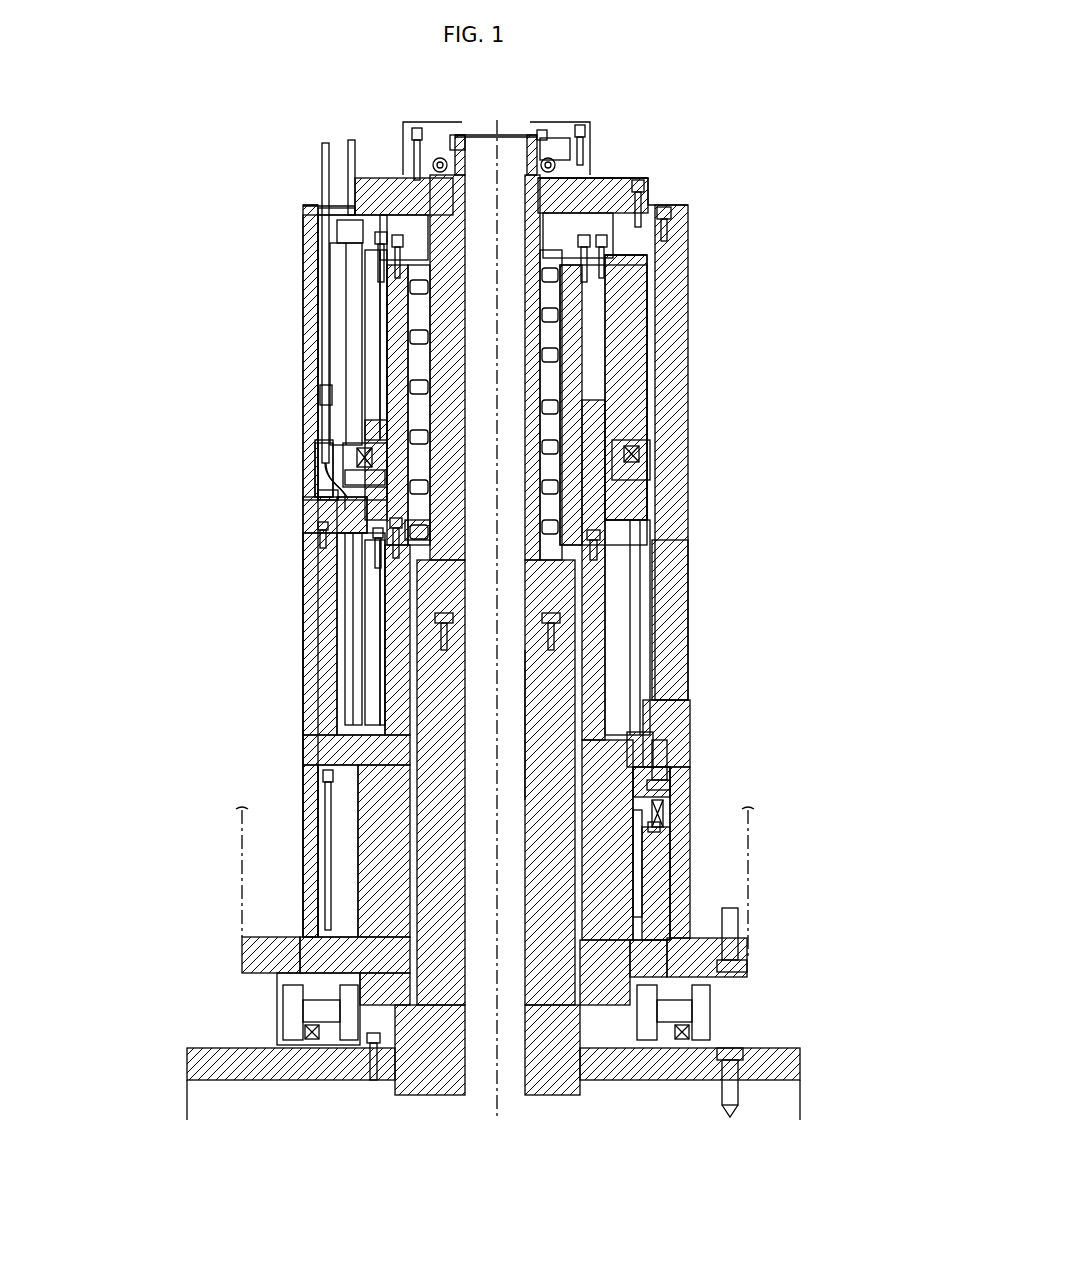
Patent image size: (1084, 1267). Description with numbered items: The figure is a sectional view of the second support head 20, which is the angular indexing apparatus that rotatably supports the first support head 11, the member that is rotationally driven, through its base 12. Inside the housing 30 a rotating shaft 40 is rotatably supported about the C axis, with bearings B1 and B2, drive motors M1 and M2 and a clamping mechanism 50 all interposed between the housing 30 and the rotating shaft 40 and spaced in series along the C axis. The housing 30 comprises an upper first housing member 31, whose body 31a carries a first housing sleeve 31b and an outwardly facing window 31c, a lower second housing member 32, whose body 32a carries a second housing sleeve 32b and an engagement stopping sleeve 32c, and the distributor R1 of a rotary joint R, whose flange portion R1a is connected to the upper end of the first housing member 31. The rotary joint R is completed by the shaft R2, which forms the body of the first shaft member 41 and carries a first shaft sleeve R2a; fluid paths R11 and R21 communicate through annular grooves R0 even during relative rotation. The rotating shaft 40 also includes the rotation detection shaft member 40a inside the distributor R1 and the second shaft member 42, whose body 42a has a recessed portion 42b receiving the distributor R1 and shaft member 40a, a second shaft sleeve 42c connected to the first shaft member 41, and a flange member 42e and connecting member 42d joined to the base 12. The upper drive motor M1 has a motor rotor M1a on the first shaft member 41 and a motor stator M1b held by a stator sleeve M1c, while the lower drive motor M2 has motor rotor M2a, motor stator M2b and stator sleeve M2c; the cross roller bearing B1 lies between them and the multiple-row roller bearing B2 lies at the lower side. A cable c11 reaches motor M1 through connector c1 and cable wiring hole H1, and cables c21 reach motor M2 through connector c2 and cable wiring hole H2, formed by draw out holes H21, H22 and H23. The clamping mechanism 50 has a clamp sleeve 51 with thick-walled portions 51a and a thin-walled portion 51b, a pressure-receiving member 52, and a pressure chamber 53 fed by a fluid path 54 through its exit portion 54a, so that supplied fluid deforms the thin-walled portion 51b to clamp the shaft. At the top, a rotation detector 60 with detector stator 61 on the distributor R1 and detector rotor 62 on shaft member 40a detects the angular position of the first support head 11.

The C axis C is at (495, 600).
The first support head 11 is at (231, 1067).
The base 12 is at (195, 1048).
The second support head 20 is at (868, 130).
The housing 30 is at (296, 301).
The first housing member 31 is at (235, 232).
The body 31a is at (308, 281).
The first housing sleeve 31b is at (308, 221).
The outwardly facing window 31c is at (318, 473).
The second housing member 32 is at (296, 596).
The body 32a is at (322, 549).
The second housing sleeve 32b is at (332, 530).
The engagement stopping sleeve 32c is at (278, 1022).
The rotating shaft 40 is at (548, 597).
The rotation detection shaft member 40a is at (462, 188).
The first shaft member 41 is at (757, 290).
The second shaft member 42 is at (525, 777).
The body 42a is at (535, 712).
The recessed portion 42b is at (537, 641).
The second shaft sleeve 42c is at (425, 533).
The connecting member 42d is at (580, 1086).
The flange member 42e is at (745, 1050).
The clamping mechanism 50 is at (778, 725).
The clamp sleeve 51 is at (684, 778).
The thick-walled portion 51a is at (667, 771).
The thin-walled portion 51b is at (635, 893).
The pressure-receiving member 52 is at (667, 800).
The pressure chamber 53 is at (640, 848).
The fluid path 54 is at (668, 546).
The exit portion 54a is at (658, 831).
The rotation detector 60 is at (633, 113).
The detector stator 61 is at (573, 139).
The detector rotor 62 is at (543, 137).
The bearing B1 is at (345, 440).
The bearing B2 is at (322, 1000).
The cable wiring hole H1 is at (335, 166).
The cable wiring hole H2 is at (212, 452).
The draw out hole H21 is at (330, 496).
The draw out hole H22 is at (330, 398).
The draw out hole H23 is at (307, 204).
The drive motor M1 is at (170, 372).
The motor rotor M1a is at (375, 333).
The motor stator M1b is at (362, 359).
The stator sleeve M1c is at (345, 385).
The drive motor M2 is at (185, 595).
The motor rotor M2a is at (372, 632).
The motor stator M2b is at (365, 661).
The stator sleeve M2c is at (332, 683).
The rotary joint R is at (757, 326).
The annular grooves R0 is at (562, 343).
The distributor R1 is at (600, 370).
The flange portion R1a is at (598, 184).
The fluid paths R11 is at (548, 352).
The shaft R2 is at (600, 340).
The first shaft sleeve R2a is at (620, 252).
The fluid paths R21 is at (562, 451).
The connector c1 is at (340, 219).
The cable c11 is at (350, 148).
The connector c2 is at (320, 513).
The cables c21 is at (345, 462).